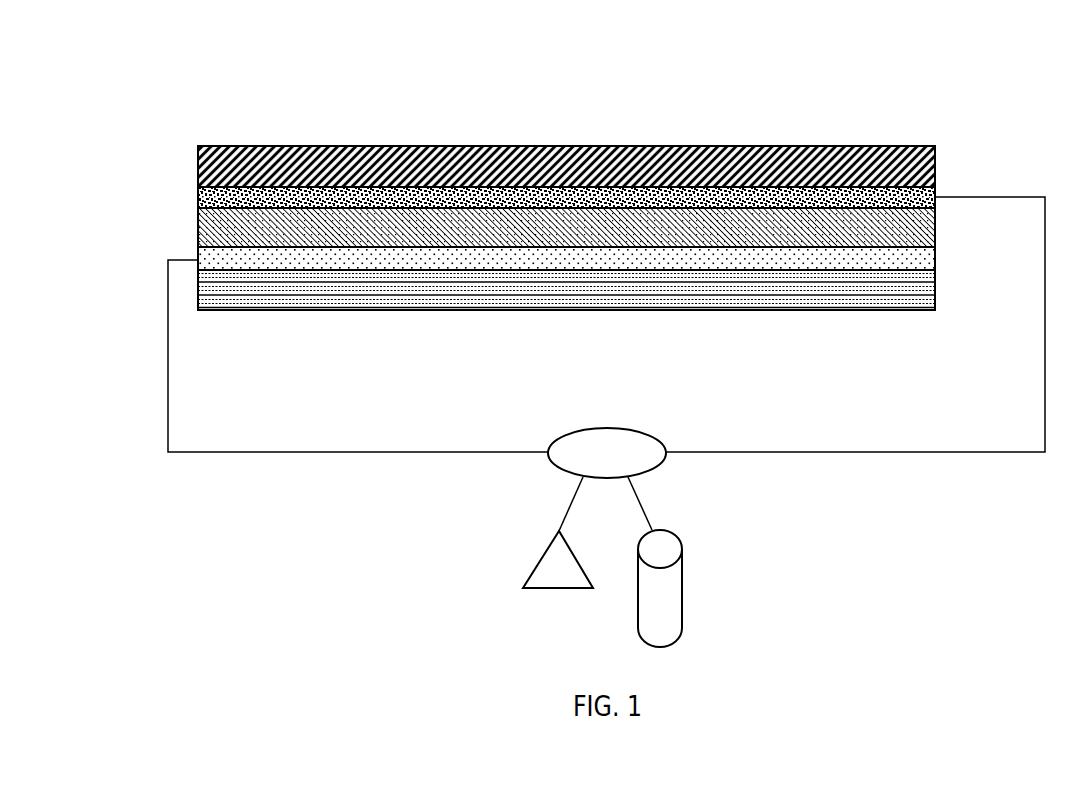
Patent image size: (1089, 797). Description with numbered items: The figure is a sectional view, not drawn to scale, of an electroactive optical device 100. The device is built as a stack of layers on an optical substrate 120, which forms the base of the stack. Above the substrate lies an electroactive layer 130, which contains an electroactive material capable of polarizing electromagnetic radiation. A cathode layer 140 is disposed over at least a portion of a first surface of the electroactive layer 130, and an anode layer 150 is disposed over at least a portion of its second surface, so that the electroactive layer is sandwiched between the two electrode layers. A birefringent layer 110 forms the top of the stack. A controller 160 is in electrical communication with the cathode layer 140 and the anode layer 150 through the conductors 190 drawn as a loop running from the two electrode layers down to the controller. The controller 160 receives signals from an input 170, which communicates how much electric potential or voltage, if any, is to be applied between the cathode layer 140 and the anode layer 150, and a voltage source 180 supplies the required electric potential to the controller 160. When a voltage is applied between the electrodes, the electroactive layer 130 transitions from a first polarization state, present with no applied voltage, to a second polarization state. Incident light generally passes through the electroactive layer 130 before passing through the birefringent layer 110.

The electroactive optical device 100 is at (537, 93).
The birefringent layer 110 is at (910, 146).
The optical substrate 120 is at (790, 310).
The electroactive layer 130 is at (935, 227).
The cathode layer 140 is at (237, 256).
The anode layer 150 is at (800, 190).
The controller 160 is at (629, 470).
The input 170 is at (540, 558).
The voltage source 180 is at (682, 588).
The circuit wire 190 is at (262, 456).